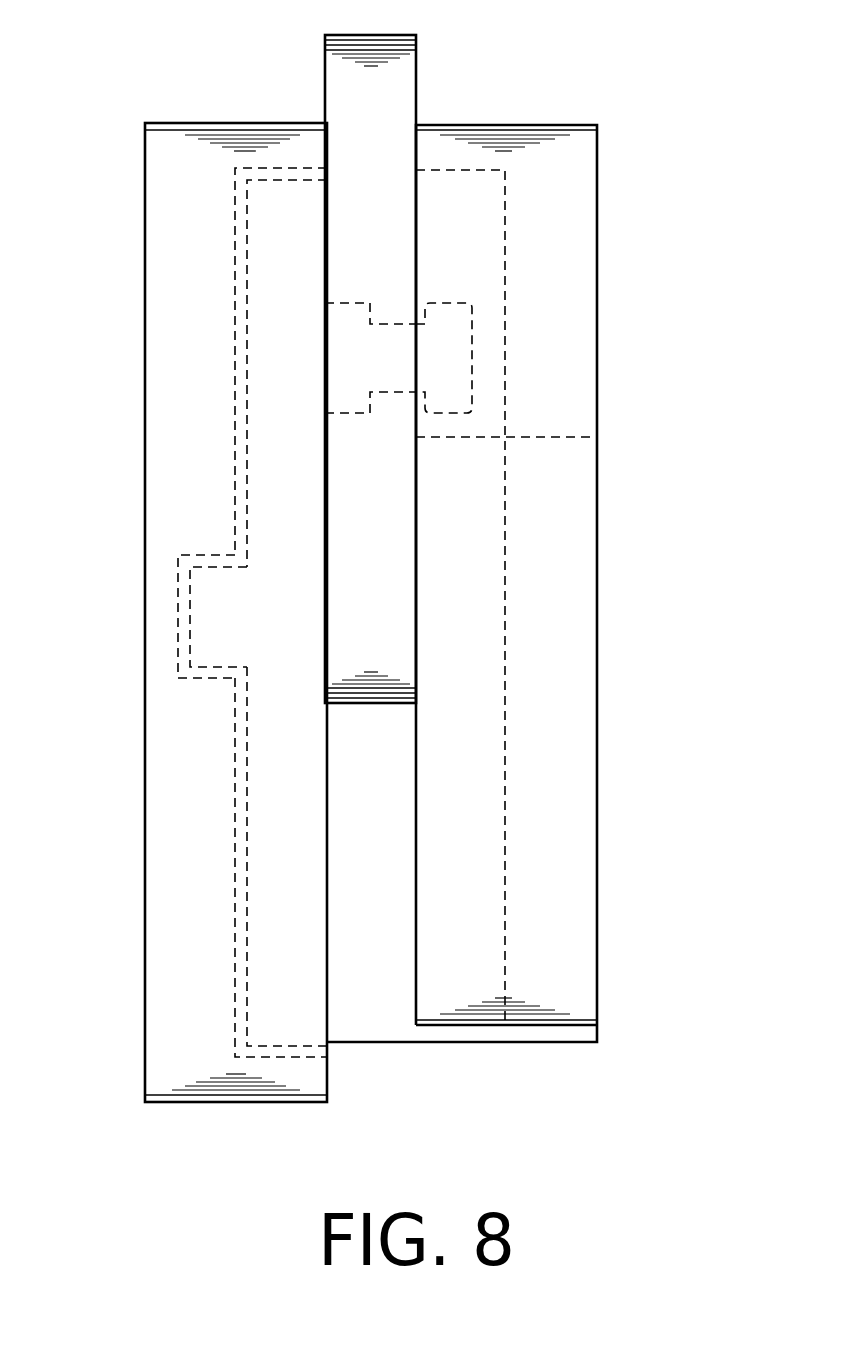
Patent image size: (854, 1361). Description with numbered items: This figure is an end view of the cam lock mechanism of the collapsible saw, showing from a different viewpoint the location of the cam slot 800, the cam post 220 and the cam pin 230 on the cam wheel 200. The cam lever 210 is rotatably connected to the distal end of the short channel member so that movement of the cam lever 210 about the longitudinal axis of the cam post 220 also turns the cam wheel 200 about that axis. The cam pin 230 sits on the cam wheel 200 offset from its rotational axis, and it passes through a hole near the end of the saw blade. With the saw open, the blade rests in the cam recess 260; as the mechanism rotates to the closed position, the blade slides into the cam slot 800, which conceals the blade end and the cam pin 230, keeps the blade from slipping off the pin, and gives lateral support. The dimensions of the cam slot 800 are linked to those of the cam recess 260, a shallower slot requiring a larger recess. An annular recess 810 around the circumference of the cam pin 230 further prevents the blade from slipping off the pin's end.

The cam wheel 200 is at (244, 826).
The cam lever 210 is at (416, 81).
The cam post 220 is at (190, 602).
The cam pin 230 is at (358, 303).
The cam recess 260 is at (553, 760).
The cam slot 800 is at (480, 254).
The annular recess 810 is at (390, 392).